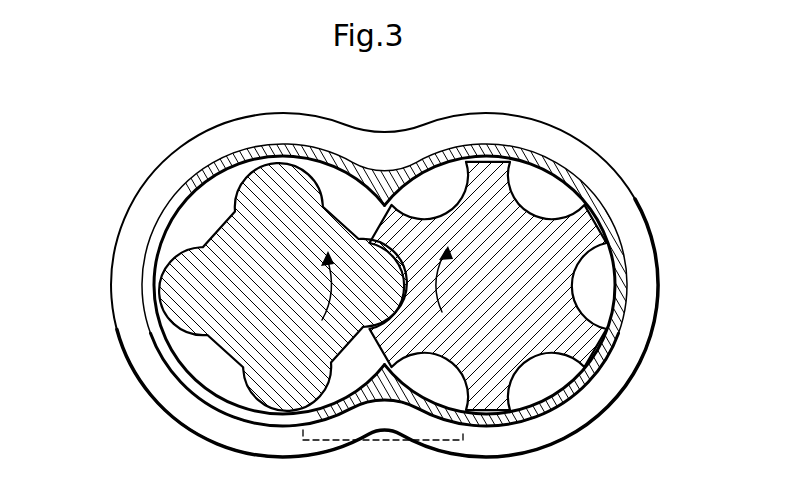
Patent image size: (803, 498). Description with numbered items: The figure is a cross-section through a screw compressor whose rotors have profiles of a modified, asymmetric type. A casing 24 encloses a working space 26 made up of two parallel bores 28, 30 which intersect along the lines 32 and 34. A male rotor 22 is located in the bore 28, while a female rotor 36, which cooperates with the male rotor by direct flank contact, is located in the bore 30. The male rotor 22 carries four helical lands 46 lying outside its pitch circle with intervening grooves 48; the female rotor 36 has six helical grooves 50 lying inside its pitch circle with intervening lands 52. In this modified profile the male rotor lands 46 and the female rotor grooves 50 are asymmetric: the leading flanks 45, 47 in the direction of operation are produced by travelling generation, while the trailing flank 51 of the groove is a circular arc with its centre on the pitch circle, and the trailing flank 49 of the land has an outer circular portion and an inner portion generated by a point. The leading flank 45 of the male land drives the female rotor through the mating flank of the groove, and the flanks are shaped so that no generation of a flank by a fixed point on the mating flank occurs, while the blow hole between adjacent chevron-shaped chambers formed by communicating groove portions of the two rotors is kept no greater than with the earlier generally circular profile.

The male rotor 22 is at (220, 287).
The casing 24 is at (497, 145).
The working space 26 is at (547, 197).
The bore 28 is at (198, 210).
The bore 30 is at (600, 282).
The line of intersection 32 is at (385, 432).
The line of intersection 34 is at (374, 195).
The female rotor 36 is at (543, 310).
The leading flank of land 45 is at (333, 375).
The helical land 46 is at (193, 322).
The leading flank of groove 47 is at (427, 365).
The groove 48 is at (200, 360).
The trailing flank of land 49 is at (240, 377).
The helical groove 50 is at (548, 378).
The trailing flank of groove 51 is at (452, 390).
The land 52 is at (578, 350).